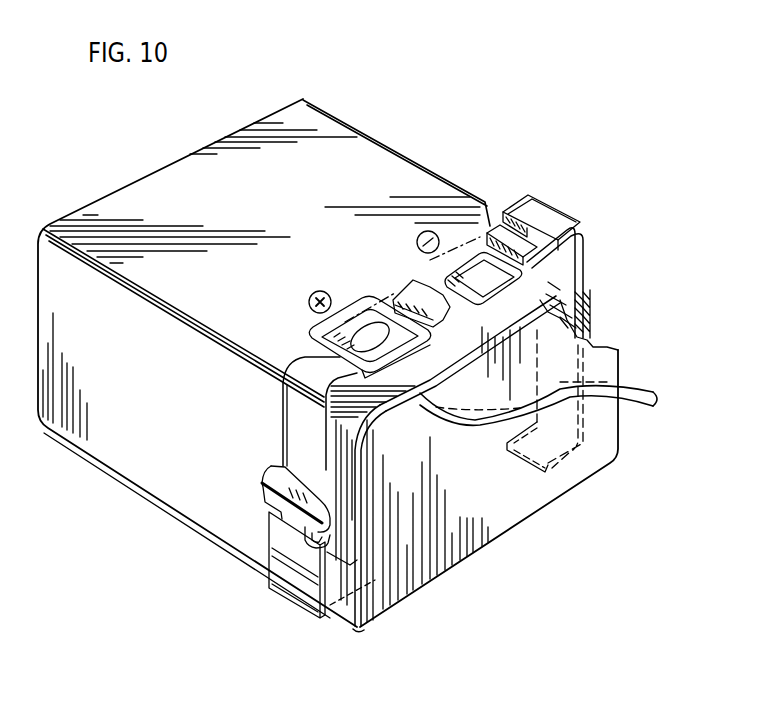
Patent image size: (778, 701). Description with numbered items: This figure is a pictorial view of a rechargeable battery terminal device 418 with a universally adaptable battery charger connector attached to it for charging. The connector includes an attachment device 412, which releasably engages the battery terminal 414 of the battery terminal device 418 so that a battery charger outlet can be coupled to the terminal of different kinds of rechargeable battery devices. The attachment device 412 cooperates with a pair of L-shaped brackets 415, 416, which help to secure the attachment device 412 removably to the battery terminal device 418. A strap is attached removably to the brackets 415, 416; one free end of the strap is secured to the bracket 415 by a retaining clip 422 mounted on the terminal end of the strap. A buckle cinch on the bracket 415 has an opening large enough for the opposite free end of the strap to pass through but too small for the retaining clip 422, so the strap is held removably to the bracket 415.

The attachment device 412 is at (567, 201).
The battery terminal 414 is at (375, 345).
The L-shaped bracket 415 is at (332, 622).
The L-shaped bracket 416 is at (565, 455).
The battery terminal device 418 is at (218, 495).
The retaining clip 422 is at (281, 508).